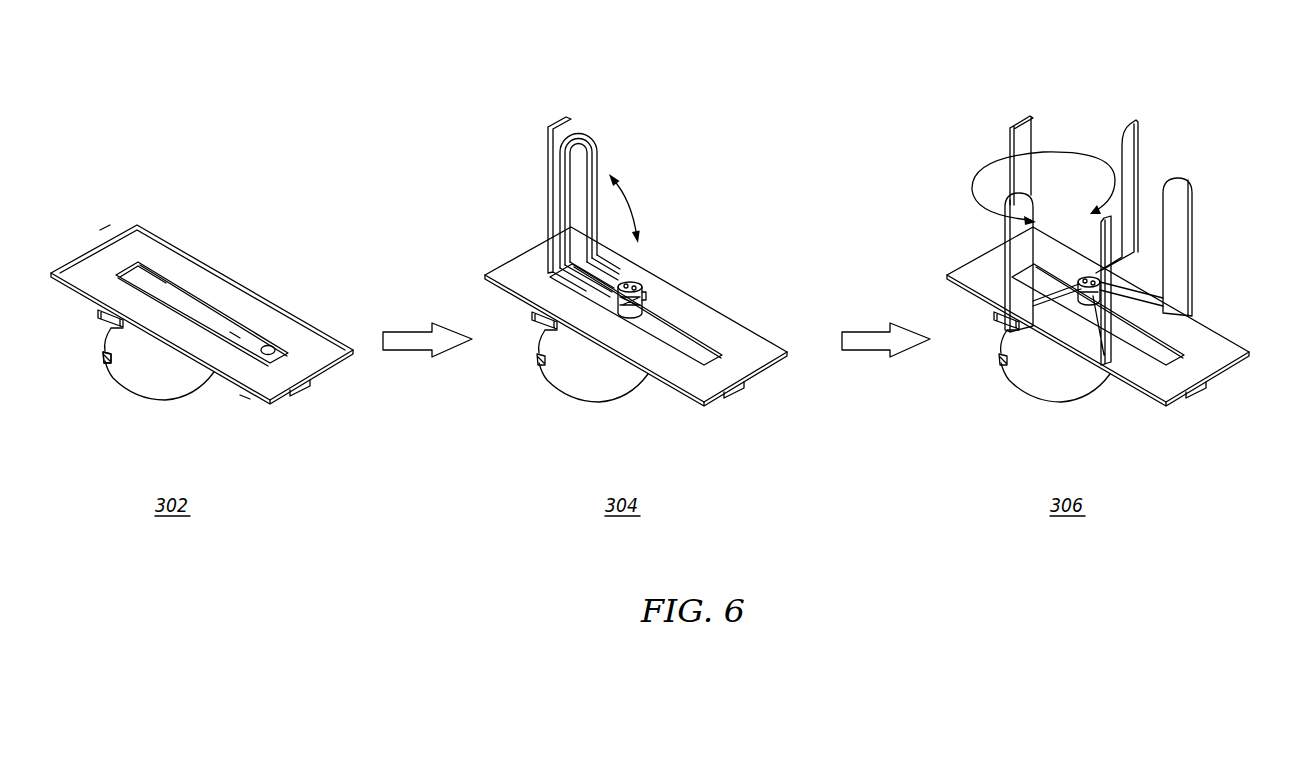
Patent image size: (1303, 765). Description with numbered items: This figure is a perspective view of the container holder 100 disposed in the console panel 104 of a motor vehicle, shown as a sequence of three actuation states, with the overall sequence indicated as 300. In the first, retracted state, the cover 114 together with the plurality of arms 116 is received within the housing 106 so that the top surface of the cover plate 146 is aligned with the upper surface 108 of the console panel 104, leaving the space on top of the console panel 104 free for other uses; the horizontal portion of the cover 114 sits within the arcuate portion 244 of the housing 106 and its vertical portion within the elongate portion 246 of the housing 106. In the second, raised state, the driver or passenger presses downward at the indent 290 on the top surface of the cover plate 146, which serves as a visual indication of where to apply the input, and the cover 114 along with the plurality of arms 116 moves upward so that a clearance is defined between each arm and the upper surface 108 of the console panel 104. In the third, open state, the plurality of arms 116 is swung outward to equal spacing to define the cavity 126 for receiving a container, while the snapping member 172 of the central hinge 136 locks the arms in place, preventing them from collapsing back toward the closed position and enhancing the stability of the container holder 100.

The method of deploying the device 300 is at (193, 100).
The container holder 100 is at (206, 312).
The console panel 104 is at (267, 296).
The housing 106 is at (202, 405).
The upper surface 108 is at (141, 242).
The cover 114 is at (162, 287).
The plurality of arms 116 is at (607, 131).
The cavity 126 is at (1150, 147).
The central hinge 136 is at (636, 284).
The cover plate 146 is at (236, 338).
The snapping member 172 is at (650, 298).
The arcuate portion 244 is at (138, 393).
The elongate portion 246 is at (243, 396).
The indent 290 is at (274, 344).